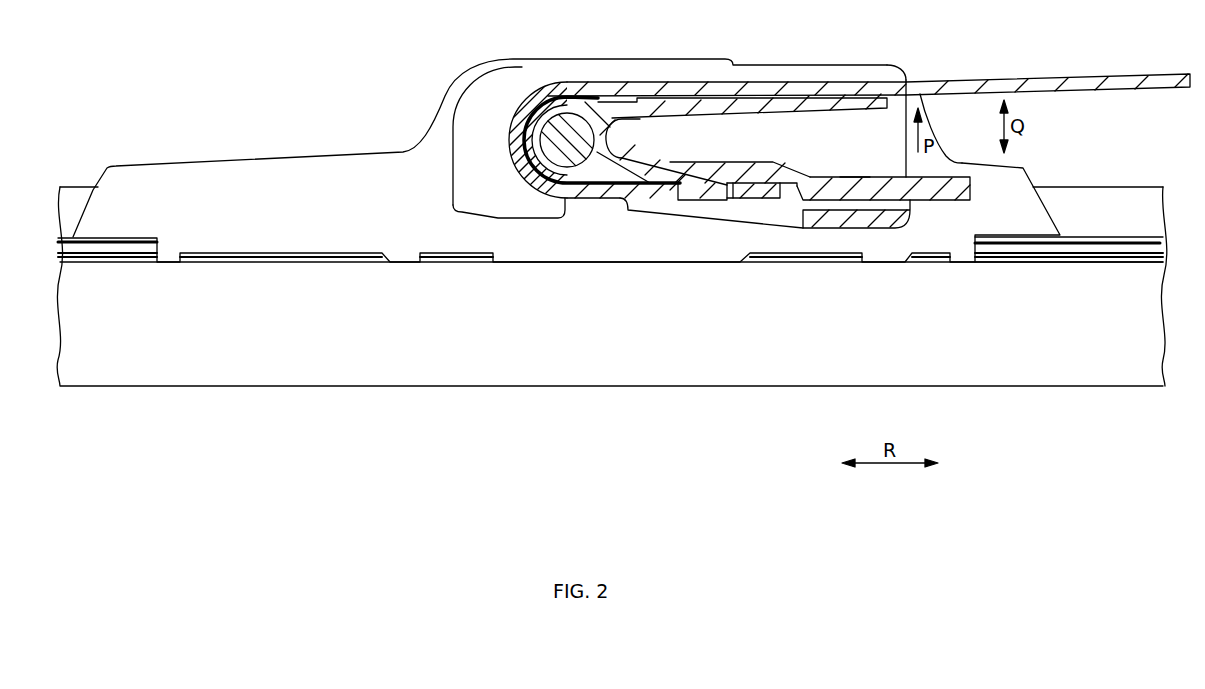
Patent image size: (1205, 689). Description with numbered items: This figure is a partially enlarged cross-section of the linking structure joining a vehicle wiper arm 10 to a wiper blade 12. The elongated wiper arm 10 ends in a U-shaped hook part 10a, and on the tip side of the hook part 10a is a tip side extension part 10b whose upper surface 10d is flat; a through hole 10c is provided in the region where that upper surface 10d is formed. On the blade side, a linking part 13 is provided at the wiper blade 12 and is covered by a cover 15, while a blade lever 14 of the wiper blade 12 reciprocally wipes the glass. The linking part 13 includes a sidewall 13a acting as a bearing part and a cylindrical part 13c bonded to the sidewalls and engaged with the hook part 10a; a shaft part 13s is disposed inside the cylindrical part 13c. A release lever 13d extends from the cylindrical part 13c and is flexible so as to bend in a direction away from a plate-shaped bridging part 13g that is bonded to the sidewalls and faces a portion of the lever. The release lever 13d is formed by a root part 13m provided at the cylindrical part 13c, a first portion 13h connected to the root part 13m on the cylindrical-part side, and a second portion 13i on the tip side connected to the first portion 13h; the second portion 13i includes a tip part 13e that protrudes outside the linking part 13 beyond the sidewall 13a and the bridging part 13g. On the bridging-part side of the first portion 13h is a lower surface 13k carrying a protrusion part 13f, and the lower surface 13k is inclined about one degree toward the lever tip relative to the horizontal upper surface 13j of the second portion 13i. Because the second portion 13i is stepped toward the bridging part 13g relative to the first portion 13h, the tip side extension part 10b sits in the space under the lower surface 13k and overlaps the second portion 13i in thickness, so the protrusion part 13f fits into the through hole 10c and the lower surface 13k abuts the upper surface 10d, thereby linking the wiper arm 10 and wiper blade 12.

The wiper arm 10 is at (1057, 74).
The hook part 10a is at (585, 87).
The tip side extension part 10b is at (645, 195).
The through hole 10c is at (682, 190).
The upper surface 10d is at (764, 182).
The wiper blade 12 is at (1120, 195).
The linking part 13 is at (785, 227).
The sidewall 13a is at (897, 77).
The cylindrical part 13c is at (543, 108).
The release lever 13d is at (818, 172).
The tip part 13e is at (960, 187).
The protrusion part 13f is at (717, 190).
The bridging part 13g is at (870, 223).
The first portion 13h is at (730, 172).
The second portion 13i is at (893, 183).
The upper surface 13j is at (857, 173).
The lower surface 13k is at (740, 190).
The root part 13m is at (630, 155).
The shaft part 13s is at (580, 148).
The blade lever 14 is at (1100, 378).
The cover 15 is at (165, 172).